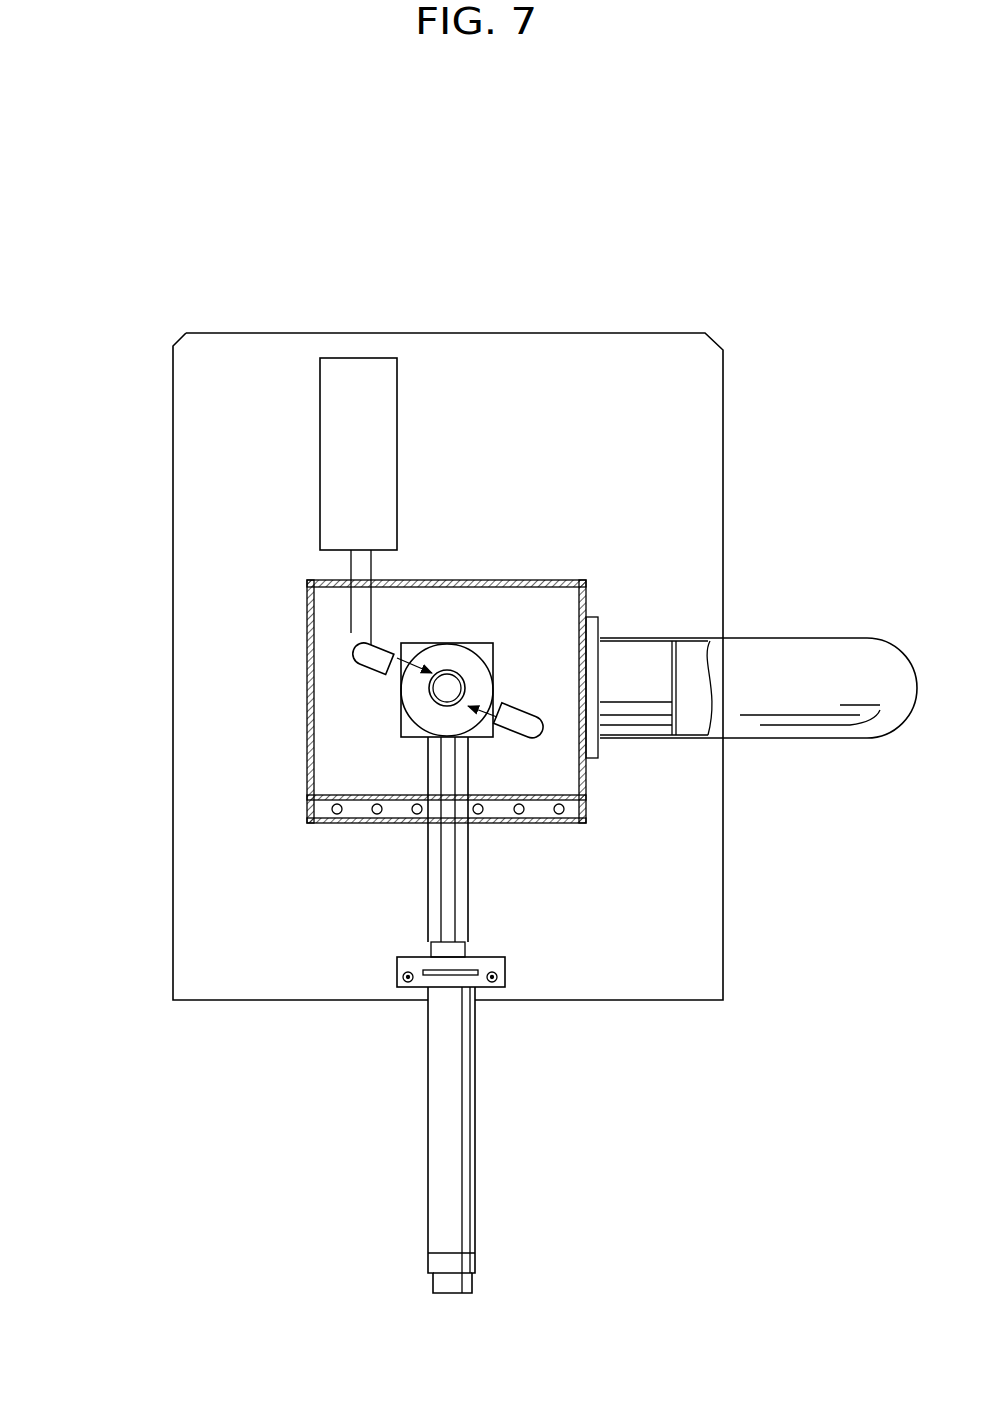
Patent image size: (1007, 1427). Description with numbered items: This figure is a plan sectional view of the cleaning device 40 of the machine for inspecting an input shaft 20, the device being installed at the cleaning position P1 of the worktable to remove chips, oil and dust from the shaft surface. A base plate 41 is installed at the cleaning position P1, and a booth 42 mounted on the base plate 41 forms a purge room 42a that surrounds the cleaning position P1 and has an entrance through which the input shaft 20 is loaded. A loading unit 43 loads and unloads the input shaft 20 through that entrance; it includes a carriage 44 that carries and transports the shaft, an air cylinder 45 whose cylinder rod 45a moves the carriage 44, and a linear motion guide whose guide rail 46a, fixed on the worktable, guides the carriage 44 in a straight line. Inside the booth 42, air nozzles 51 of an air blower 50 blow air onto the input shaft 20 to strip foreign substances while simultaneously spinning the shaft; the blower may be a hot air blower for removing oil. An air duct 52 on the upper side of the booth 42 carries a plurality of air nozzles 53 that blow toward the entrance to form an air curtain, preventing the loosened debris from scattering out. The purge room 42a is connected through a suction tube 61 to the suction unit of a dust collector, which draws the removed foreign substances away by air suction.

The input shaft 20 is at (440, 668).
The cleaning device 40 is at (357, 652).
The base plate 41 is at (193, 636).
The booth 42 is at (461, 655).
The purge room 42a is at (556, 614).
The loading unit 43 is at (446, 1117).
The carriage 44 is at (487, 653).
The air cylinder 45 is at (467, 1152).
The cylinder rod 45a is at (449, 926).
The guide rail 46a is at (435, 868).
The air blower 50 is at (365, 358).
The air nozzles 51 is at (378, 660).
The air duct 52 is at (372, 850).
The air nozzles 53 is at (378, 815).
The suction tube 61 is at (785, 638).
The cleaning position P1 is at (345, 763).